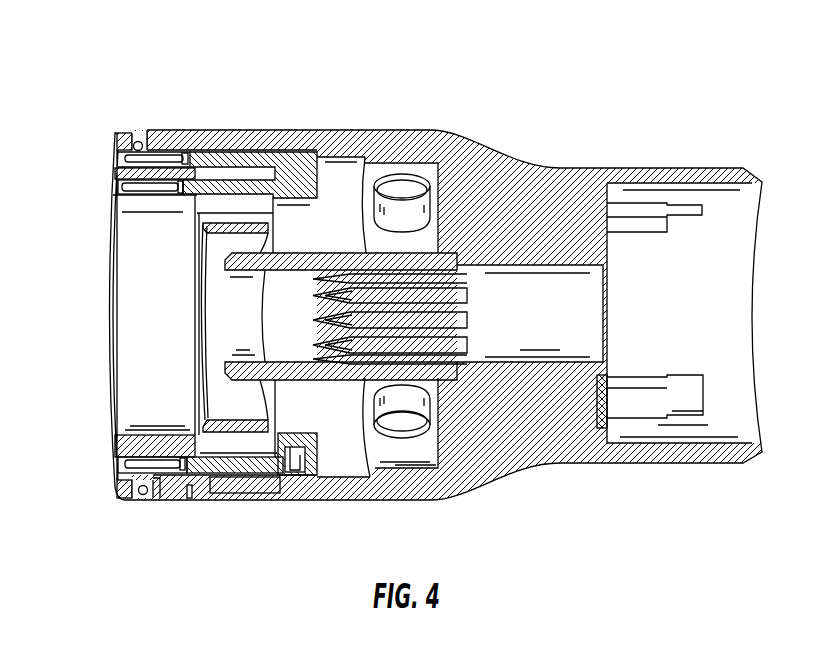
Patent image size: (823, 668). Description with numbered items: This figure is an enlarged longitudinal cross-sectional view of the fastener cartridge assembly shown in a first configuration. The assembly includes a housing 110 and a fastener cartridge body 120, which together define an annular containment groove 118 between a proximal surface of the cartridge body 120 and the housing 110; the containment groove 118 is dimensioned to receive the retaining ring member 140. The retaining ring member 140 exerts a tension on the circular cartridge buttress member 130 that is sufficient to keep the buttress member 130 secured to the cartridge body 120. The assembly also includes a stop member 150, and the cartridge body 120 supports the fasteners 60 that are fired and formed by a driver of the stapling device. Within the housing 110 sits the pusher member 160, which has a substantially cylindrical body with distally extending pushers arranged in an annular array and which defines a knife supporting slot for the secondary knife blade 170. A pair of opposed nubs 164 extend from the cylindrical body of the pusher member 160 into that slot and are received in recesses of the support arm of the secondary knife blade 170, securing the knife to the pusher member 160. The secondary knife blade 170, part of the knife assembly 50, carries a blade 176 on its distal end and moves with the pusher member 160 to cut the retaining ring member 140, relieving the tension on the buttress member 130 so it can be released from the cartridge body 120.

The housing 110 is at (543, 166).
The circular cartridge buttress member 130 is at (92, 148).
The containment groove 118 is at (141, 130).
The stop member 150 is at (130, 503).
The fastener cartridge body 120 is at (127, 450).
The fasteners 60 is at (167, 157).
The pusher member 160 is at (296, 163).
The opposed nubs 164 is at (310, 480).
The knife assembly 50 is at (243, 222).
The secondary knife blade 170 is at (229, 498).
The blade 176 is at (189, 500).
The retaining ring member 140 is at (147, 498).